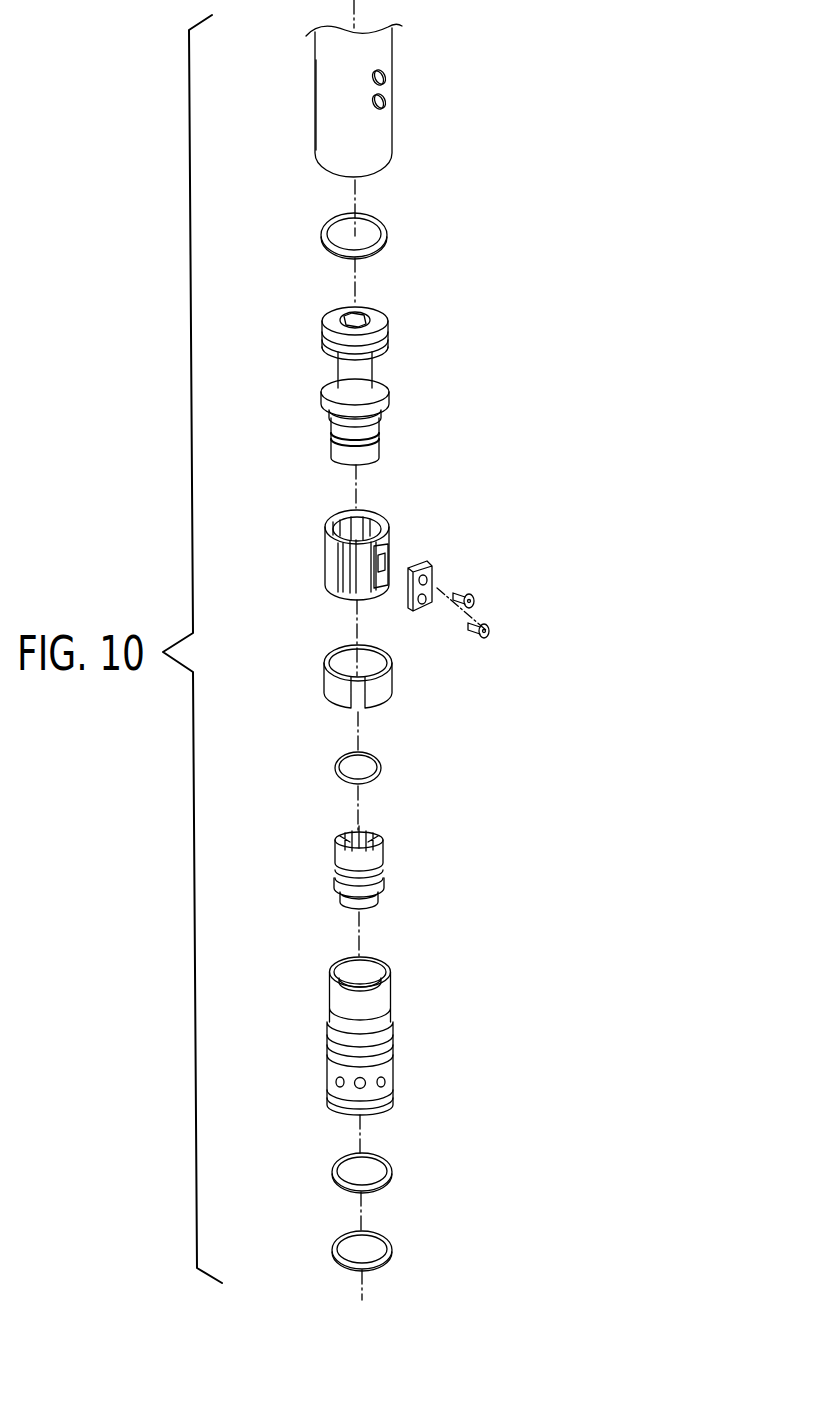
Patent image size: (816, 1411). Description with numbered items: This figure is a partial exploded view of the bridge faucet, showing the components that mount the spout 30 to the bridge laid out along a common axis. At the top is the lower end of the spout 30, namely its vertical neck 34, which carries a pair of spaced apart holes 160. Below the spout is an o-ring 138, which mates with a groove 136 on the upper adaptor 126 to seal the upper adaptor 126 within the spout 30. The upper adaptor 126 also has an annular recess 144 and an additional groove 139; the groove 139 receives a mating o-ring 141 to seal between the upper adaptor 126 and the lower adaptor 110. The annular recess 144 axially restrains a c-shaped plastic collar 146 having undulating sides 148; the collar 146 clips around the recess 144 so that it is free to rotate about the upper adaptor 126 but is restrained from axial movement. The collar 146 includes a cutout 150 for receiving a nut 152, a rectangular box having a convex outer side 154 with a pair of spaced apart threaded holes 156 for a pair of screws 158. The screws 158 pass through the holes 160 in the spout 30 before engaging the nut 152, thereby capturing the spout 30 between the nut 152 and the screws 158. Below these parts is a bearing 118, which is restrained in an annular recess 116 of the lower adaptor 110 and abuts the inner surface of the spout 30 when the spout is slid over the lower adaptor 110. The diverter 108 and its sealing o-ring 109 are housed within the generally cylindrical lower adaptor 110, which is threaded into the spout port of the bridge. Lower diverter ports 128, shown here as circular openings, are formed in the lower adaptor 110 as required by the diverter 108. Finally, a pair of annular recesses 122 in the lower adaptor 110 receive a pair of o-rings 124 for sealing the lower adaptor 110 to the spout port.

The spout 30 is at (311, 58).
The vertical neck 34 is at (311, 74).
The spaced apart holes 160 is at (386, 75).
The o-ring 138 is at (322, 236).
The upper adaptor 126 is at (385, 365).
The groove 136 is at (389, 326).
The annular recess 144 is at (384, 392).
The groove 139 is at (380, 435).
The c-shaped plastic collar 146 is at (361, 545).
The undulating sides 148 is at (327, 590).
The cutout 150 is at (388, 545).
The nut 152 is at (464, 588).
The convex outer side 154 is at (411, 603).
The threaded holes 156 is at (427, 581).
The screws 158 is at (474, 602).
The bearing 118 is at (325, 664).
The o-ring 141 is at (382, 770).
The diverter 108 is at (391, 863).
The sealing o-ring 109 is at (385, 877).
The lower adaptor 110 is at (378, 1021).
The annular recess 116 is at (392, 1010).
The annular recesses 122 is at (366, 1053).
The lower diverter ports 128 is at (385, 1080).
The o-rings 124 is at (392, 1172).